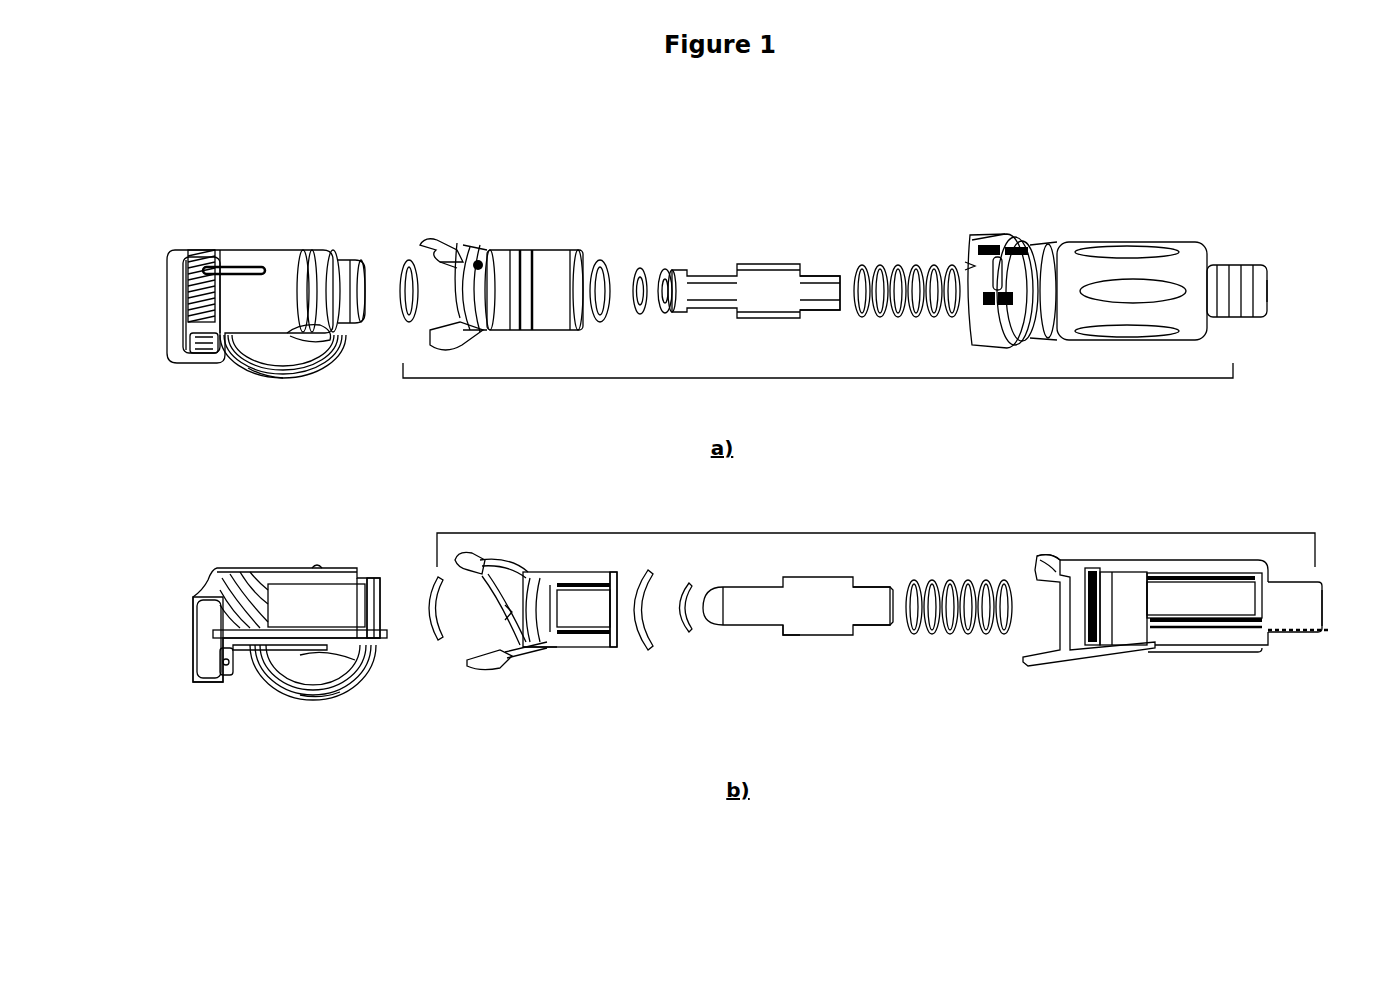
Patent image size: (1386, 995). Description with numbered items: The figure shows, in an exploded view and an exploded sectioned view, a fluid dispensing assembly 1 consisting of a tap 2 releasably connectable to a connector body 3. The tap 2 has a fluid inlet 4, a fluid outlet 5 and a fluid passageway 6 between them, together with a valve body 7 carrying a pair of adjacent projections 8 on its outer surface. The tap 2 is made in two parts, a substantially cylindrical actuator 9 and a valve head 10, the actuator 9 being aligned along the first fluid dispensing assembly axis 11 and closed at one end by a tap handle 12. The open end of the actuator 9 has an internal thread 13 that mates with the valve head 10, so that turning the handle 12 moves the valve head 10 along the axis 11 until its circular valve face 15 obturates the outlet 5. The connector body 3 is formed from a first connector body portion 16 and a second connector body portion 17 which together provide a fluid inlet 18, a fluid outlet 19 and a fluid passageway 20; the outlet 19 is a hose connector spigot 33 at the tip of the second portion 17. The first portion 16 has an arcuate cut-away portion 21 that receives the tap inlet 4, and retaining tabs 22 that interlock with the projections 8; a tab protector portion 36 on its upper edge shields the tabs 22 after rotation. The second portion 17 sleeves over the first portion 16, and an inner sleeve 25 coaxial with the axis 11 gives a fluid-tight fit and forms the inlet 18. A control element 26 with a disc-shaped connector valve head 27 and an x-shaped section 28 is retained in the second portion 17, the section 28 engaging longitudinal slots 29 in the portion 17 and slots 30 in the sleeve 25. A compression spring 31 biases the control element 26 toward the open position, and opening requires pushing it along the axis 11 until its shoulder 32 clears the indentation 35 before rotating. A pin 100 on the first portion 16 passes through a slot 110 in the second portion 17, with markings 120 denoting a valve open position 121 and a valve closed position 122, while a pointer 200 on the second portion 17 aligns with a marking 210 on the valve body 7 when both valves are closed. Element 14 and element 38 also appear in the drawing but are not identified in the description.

The fluid dispensing assembly 1 is at (1145, 437).
The tap 2 is at (246, 445).
The connector body 3 is at (778, 378).
The fluid inlet 4 is at (275, 398).
The fluid outlet 5 is at (389, 480).
The fluid passageway 6 is at (192, 597).
The valve body 7 is at (202, 249).
The projections 8 is at (316, 377).
The cylindrical actuator 9 is at (323, 566).
The valve head 10 is at (339, 600).
The first fluid dispensing assembly axis 11 is at (163, 306).
The tap handle 12 is at (166, 333).
The internal thread 13 is at (217, 573).
The collar ring 14 is at (265, 682).
The circular valve face 15 is at (390, 569).
The first connector body portion 16 is at (777, 469).
The second connector body portion 17 is at (1145, 437).
The fluid inlet 18 is at (542, 648).
The fluid outlet 19 is at (1272, 290).
The fluid passageway 20 is at (1168, 600).
The arcuate cut-away portion 21 is at (461, 704).
The retaining tabs 22 is at (420, 240).
The inner sleeve 25 is at (634, 645).
The control element 26 is at (794, 266).
The connector valve head 27 is at (665, 270).
The x-shaped section 28 is at (878, 473).
The longitudinal slots 29 is at (1152, 652).
The slots 30 is at (617, 566).
The compression spring 31 is at (903, 318).
The shoulder 32 is at (792, 634).
The hose connector spigot 33 is at (1235, 265).
The indentation 35 is at (1150, 612).
The tab protector portion 36 is at (466, 345).
The collar lip 38 is at (1040, 556).
The pin 100 is at (478, 262).
The slot 110 is at (1005, 240).
The markings 120 is at (1032, 243).
The valve open position 121 is at (1005, 302).
The valve closed position 122 is at (985, 243).
The pointer 200 is at (968, 242).
The marking 210 is at (262, 266).